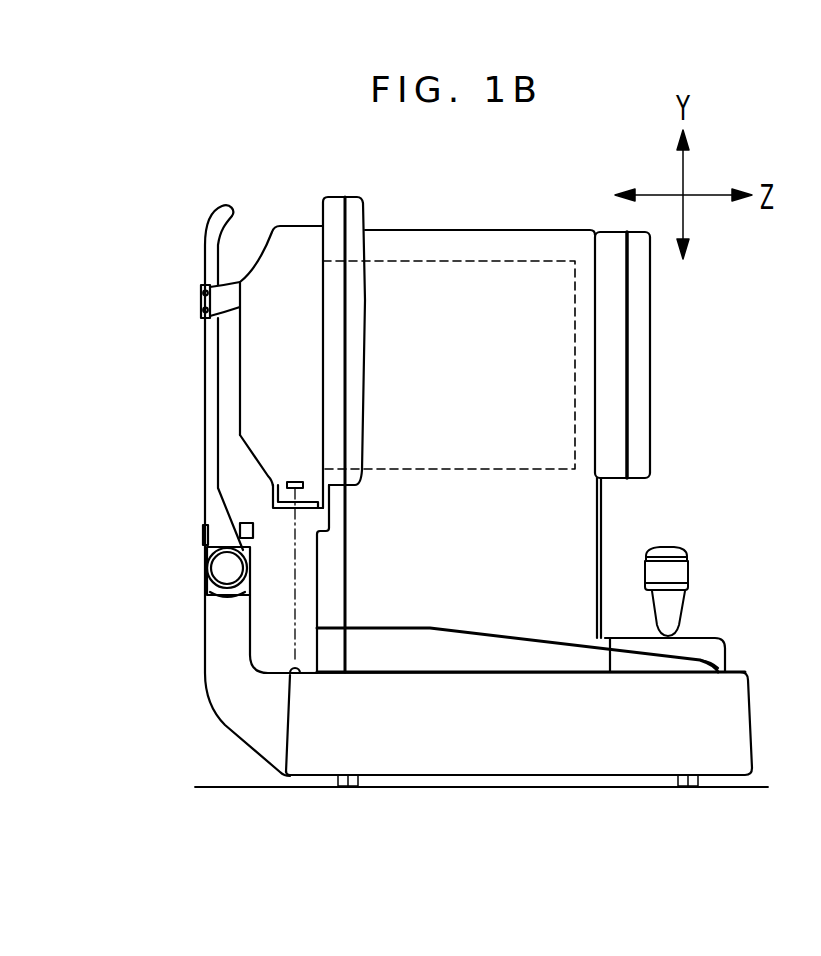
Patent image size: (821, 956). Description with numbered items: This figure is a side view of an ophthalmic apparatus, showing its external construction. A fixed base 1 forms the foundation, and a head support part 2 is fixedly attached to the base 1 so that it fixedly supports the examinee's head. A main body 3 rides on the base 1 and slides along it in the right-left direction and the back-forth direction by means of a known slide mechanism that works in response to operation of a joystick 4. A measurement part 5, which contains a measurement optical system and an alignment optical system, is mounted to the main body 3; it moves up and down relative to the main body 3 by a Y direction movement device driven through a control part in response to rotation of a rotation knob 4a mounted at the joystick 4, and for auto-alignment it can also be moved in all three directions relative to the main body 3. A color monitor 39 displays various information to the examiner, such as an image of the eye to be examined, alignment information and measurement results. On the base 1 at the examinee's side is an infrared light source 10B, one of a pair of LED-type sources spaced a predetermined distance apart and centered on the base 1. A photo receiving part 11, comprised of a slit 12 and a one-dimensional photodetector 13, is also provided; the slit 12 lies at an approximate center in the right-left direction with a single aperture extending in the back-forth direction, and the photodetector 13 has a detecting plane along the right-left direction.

The fixed base 1 is at (507, 755).
The head support part 2 is at (220, 530).
The main body 3 is at (577, 545).
The joystick 4 is at (667, 545).
The rotation knob 4a is at (670, 572).
The measurement part 5 is at (487, 261).
The light source 10B is at (300, 676).
The photo receiving part 11 is at (128, 432).
The slit 12 is at (272, 503).
The one-dimensional photodetector 13 is at (285, 484).
The color monitor 39 is at (650, 332).